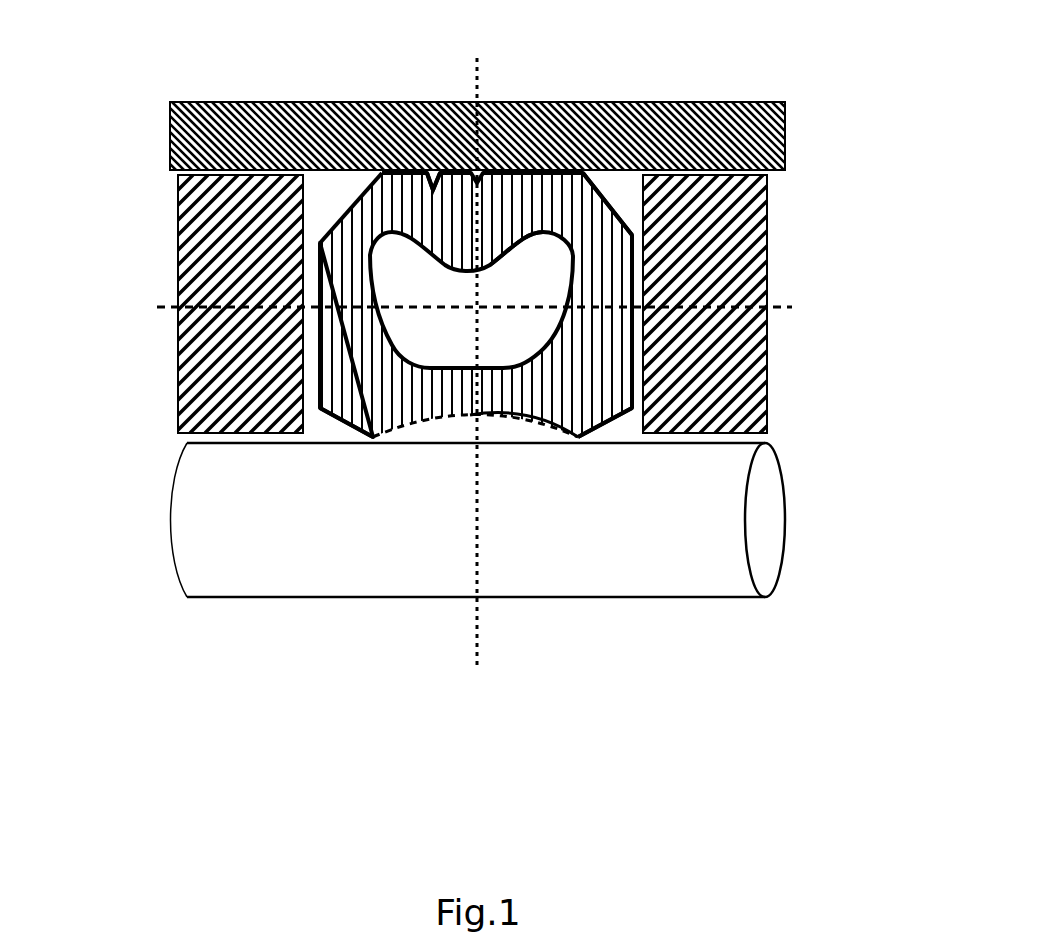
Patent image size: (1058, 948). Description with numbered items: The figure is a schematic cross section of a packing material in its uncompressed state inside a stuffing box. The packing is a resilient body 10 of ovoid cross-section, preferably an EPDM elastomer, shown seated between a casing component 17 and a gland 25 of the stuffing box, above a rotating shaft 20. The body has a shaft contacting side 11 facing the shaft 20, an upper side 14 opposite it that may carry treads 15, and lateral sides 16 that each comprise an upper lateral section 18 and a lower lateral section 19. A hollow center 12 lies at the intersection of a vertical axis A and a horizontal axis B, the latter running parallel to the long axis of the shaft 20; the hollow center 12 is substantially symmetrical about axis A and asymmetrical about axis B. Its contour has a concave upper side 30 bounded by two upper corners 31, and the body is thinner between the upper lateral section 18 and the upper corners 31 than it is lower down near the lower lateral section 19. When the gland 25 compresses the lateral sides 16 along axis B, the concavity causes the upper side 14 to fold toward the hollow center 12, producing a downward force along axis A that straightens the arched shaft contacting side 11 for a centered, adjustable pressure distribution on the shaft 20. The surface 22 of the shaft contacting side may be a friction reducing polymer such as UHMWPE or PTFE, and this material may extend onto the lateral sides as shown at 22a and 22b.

The resilient body 10 is at (529, 231).
The shaft contacting side 11 is at (458, 563).
The hollow center 12 is at (319, 276).
The upper side 14 is at (291, 140).
The treads 15 is at (405, 97).
The lateral sides 16 is at (276, 337).
The casing component 17 is at (497, 172).
The upper lateral section 18 is at (196, 247).
The lower lateral section 19 is at (768, 467).
The shaft 20 is at (430, 588).
The surface of the shaft contacting side 22 is at (565, 573).
The lateral extension of the shaft contacting surface material 22a is at (715, 546).
The lateral extension of the shaft contacting surface material 22b is at (219, 492).
The gland 25 is at (701, 318).
The concave upper side 30 is at (546, 150).
The upper corners 31 is at (743, 155).
The axis A is at (478, 340).
The axis B is at (487, 314).